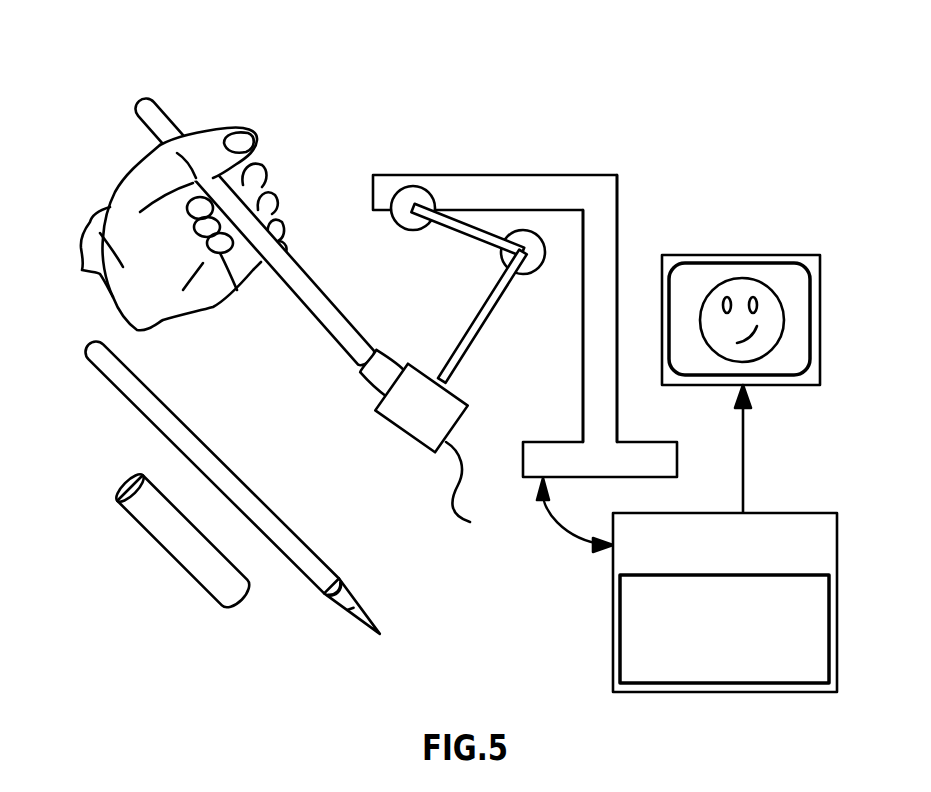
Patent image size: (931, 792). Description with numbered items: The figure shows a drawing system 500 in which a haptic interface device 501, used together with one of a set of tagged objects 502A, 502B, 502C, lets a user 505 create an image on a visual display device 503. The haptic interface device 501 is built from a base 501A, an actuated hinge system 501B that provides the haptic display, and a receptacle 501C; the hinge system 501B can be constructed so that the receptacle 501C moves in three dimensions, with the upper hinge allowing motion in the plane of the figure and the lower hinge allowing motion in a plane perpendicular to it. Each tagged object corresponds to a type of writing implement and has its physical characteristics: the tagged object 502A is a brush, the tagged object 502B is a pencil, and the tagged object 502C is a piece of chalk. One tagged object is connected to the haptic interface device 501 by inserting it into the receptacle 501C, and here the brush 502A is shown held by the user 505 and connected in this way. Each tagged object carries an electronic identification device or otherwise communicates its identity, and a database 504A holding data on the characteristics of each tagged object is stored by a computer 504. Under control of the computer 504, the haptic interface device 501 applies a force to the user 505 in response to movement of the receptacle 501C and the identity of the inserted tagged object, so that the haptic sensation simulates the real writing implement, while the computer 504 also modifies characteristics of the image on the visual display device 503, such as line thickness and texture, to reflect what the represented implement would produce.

The drawing system 500 is at (268, 90).
The user 505 is at (92, 224).
The tagged object (brush) 502A is at (310, 310).
The tagged object (pencil) 502B is at (220, 453).
The tagged object (chalk) 502C is at (157, 542).
The haptic interface device 501 is at (540, 174).
The base 501A is at (580, 360).
The actuated hinge system 501B is at (483, 300).
The receptacle 501C is at (452, 450).
The visual display device 503 is at (747, 255).
The computer 504 is at (612, 600).
The database 504A is at (821, 598).